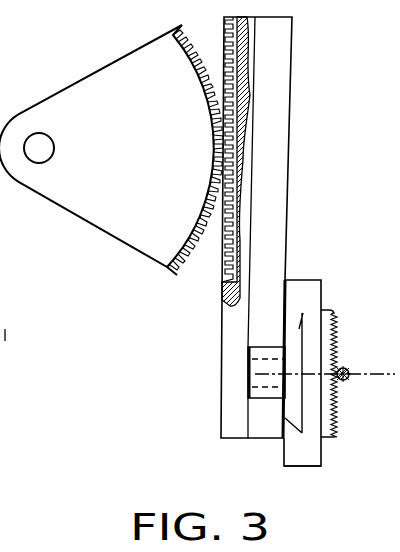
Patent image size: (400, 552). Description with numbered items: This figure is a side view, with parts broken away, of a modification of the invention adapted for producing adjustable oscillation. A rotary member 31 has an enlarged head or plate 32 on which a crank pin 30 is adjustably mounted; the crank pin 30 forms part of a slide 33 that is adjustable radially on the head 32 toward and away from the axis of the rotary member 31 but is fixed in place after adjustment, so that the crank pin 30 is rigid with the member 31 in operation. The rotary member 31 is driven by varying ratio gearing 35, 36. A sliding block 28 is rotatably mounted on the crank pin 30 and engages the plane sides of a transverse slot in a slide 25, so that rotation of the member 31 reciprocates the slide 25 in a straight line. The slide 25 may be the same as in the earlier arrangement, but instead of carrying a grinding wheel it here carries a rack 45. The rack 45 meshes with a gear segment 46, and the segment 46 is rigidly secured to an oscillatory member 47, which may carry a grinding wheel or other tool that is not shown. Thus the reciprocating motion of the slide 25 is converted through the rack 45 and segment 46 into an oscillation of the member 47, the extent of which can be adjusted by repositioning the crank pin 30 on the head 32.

The slide 25 is at (272, 247).
The sliding block 28 is at (262, 352).
The crank pin 30 is at (245, 380).
The rotary member 31 is at (312, 458).
The head or plate 32 is at (338, 377).
The slide 33 is at (285, 325).
The varying ratio gearing 35 is at (330, 436).
The varying ratio gearing 36 is at (346, 381).
The rack 45 is at (223, 232).
The gear segment 46 is at (205, 207).
The oscillatory member 47 is at (93, 197).